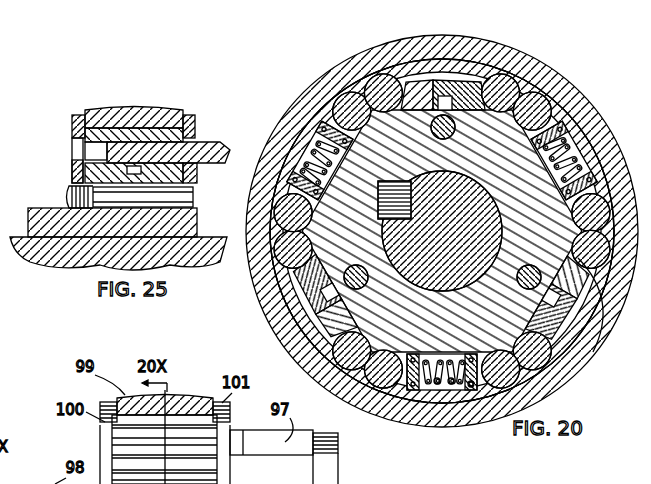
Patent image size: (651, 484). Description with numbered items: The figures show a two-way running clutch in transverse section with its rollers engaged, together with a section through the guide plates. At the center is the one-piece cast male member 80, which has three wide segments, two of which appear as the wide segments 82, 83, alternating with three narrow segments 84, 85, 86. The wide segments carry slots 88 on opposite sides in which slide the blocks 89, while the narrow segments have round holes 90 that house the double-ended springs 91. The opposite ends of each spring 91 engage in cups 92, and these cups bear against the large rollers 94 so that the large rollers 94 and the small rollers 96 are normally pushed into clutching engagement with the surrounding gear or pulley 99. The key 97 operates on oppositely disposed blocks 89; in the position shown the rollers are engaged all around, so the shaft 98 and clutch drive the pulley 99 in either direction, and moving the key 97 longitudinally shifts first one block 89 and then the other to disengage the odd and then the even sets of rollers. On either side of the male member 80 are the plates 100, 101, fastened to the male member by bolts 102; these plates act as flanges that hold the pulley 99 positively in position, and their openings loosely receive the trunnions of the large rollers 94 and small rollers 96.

In FIG. 25, the male member 80 is at (100, 225).
In FIG. 20, the male member 80 is at (497, 400).
In FIG. 20, the wide segment 82 is at (587, 322).
In FIG. 20, the wide segment 83 is at (291, 322).
In FIG. 20, the narrow segment 84 is at (596, 134).
In FIG. 20, the narrow segment 85 is at (481, 400).
In FIG. 20, the narrow segment 86 is at (304, 118).
In FIG. 20, the slot 88 is at (604, 290).
In FIG. 20, the block 89 is at (524, 63).
In FIG. 20, the round hole 90 is at (435, 406).
In FIG. 20, the double-ended spring 91 is at (453, 406).
In FIG. 20, the cup 92 is at (319, 100).
In FIG. 20, the large roller 94 is at (341, 84).
In FIG. 20, the small roller 96 is at (361, 66).
In FIG. 25, the key 97 is at (220, 143).
In FIG. 20, the key 97 is at (281, 302).
In FIG. 25, the shaft 98 is at (71, 262).
In FIG. 25, the pulley 99 is at (150, 108).
In FIG. 25, the plate 100 is at (78, 114).
In FIG. 25, the plate 101 is at (193, 115).
In FIG. 25, the bolt 102 is at (190, 198).
In FIG. 20, the bolt 102 is at (522, 300).